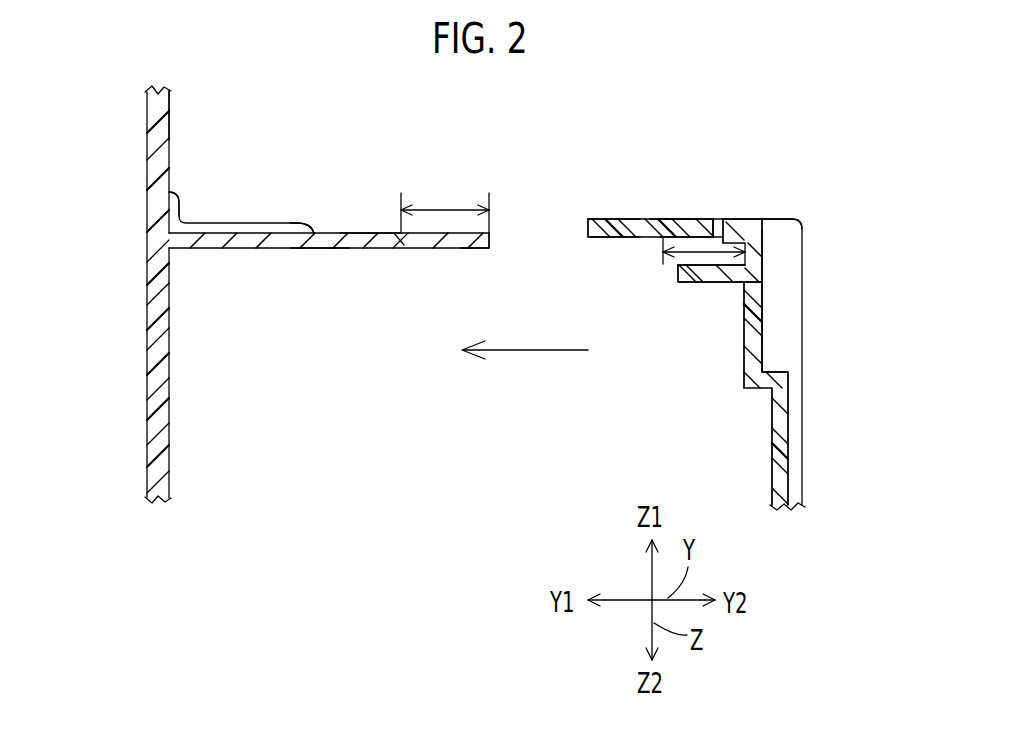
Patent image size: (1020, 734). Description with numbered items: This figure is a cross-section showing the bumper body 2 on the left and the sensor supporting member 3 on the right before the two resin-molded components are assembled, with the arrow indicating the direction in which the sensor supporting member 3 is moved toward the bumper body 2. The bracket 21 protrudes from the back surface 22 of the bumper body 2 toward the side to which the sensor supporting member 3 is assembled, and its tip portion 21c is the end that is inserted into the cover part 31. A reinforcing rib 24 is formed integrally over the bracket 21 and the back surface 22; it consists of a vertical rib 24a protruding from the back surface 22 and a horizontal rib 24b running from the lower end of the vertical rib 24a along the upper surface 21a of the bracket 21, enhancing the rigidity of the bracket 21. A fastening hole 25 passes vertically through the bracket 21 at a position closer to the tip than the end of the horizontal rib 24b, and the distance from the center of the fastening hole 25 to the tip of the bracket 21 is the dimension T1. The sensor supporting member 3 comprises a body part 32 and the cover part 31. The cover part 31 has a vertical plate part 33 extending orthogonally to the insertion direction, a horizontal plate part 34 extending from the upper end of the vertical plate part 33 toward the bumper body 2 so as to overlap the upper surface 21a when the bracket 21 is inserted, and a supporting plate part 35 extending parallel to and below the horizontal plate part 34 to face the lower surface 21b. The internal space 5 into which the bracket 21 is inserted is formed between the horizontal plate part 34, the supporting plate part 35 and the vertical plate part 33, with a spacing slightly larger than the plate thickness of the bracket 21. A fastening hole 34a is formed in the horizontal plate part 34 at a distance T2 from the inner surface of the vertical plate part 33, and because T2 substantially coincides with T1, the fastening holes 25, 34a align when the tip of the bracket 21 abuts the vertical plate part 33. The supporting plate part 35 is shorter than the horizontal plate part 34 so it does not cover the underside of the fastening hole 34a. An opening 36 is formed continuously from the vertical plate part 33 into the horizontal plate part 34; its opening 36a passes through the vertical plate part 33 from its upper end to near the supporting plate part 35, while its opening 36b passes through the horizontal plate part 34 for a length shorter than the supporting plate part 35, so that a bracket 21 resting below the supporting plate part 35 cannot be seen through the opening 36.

The bumper body 2 is at (144, 151).
The back surface 22 is at (170, 130).
The bracket 21 is at (336, 231).
The upper surface 21a is at (362, 233).
The lower surface 21b is at (322, 249).
The tip portion 21c is at (481, 249).
The reinforcing rib 24 is at (218, 222).
The vertical rib 24a is at (179, 205).
The horizontal rib 24b is at (275, 224).
The fastening hole 25 is at (403, 249).
The dimension T1 is at (445, 204).
The sensor supporting member 3 is at (806, 348).
The cover part 31 is at (612, 216).
The horizontal plate part 34 is at (693, 218).
The fastening hole 34a is at (667, 218).
The internal space 5 is at (724, 218).
The opening 36 is at (893, 188).
The opening 36a is at (763, 250).
The opening 36b is at (737, 222).
The vertical plate part 33 is at (763, 318).
The body part 32 is at (790, 460).
The supporting plate part 35 is at (723, 283).
The dimension T2 is at (698, 286).